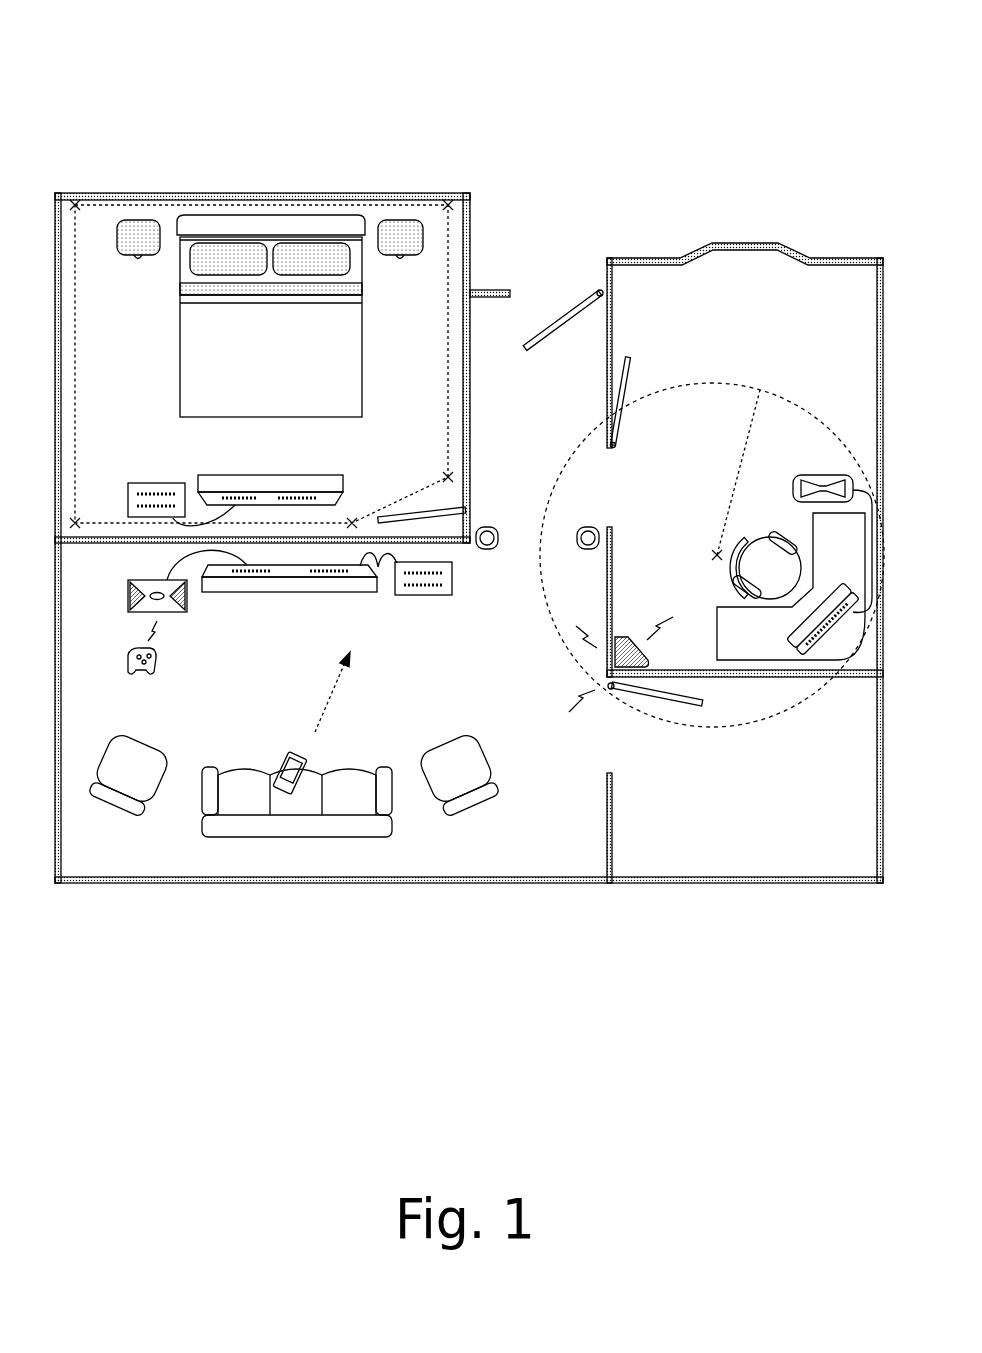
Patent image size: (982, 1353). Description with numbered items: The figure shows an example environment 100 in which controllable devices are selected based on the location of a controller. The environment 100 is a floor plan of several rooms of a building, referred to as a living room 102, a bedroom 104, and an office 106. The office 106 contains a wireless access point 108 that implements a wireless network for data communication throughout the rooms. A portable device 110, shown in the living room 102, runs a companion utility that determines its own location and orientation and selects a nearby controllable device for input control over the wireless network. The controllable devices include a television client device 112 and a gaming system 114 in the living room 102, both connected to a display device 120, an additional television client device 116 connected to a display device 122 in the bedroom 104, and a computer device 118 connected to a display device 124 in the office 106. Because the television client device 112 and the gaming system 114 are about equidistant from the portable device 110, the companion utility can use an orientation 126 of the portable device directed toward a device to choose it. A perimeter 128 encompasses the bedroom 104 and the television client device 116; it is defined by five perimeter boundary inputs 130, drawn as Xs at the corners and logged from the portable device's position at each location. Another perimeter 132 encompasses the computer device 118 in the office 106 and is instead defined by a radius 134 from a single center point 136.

The environment 100 is at (761, 56).
The living room 102 is at (428, 849).
The bedroom 104 is at (433, 299).
The office 106 is at (738, 291).
The wireless access point 108 is at (668, 602).
The portable device 110 is at (285, 757).
The television client device 112 is at (443, 634).
The gaming system 114 is at (112, 611).
The television client device 116 is at (175, 471).
The computer device 118 is at (837, 474).
The display device 120 is at (312, 634).
The display device 122 is at (292, 466).
The display device 124 is at (783, 649).
The orientation 126 is at (380, 722).
The perimeter 128 is at (449, 412).
The perimeter boundary inputs 130 is at (448, 206).
The perimeter 132 is at (741, 381).
The radius 134 is at (735, 456).
The center point 136 is at (703, 547).